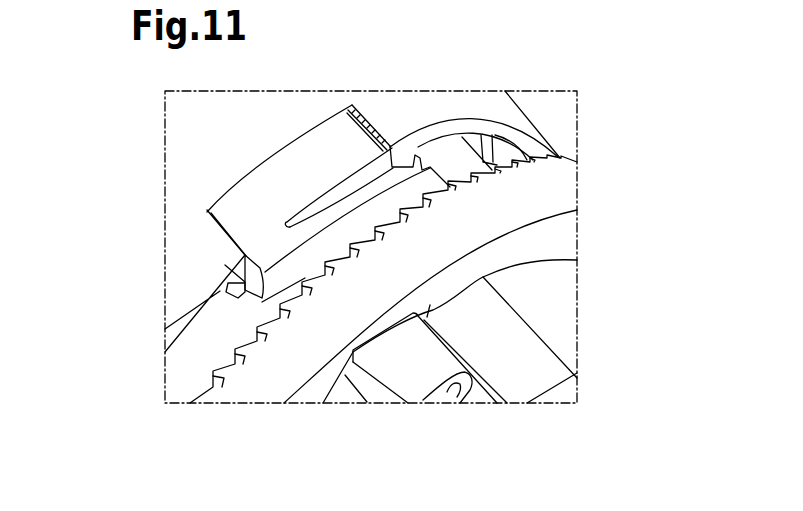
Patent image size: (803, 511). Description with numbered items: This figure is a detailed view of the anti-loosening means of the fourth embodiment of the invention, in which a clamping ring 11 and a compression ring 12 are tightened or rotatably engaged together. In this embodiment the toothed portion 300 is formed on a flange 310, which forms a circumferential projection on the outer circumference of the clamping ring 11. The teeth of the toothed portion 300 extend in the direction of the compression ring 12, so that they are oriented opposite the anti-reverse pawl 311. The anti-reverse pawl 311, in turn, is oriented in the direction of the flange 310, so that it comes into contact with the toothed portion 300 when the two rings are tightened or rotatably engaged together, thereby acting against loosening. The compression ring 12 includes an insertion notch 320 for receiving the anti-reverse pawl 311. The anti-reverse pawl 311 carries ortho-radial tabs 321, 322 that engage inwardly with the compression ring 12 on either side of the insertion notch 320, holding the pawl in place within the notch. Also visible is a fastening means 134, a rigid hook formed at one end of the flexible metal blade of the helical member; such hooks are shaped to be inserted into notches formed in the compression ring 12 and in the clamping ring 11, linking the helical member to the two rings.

The clamping ring 11 is at (555, 305).
The compression ring 12 is at (193, 160).
The fastening means 134 is at (413, 363).
The toothed portion 300 is at (221, 367).
The flange 310 is at (557, 190).
The anti-reverse pawl 311 is at (322, 147).
The insertion notch 320 is at (221, 238).
The ortho-radial tab 321 is at (232, 295).
The ortho-radial tab 322 is at (403, 162).